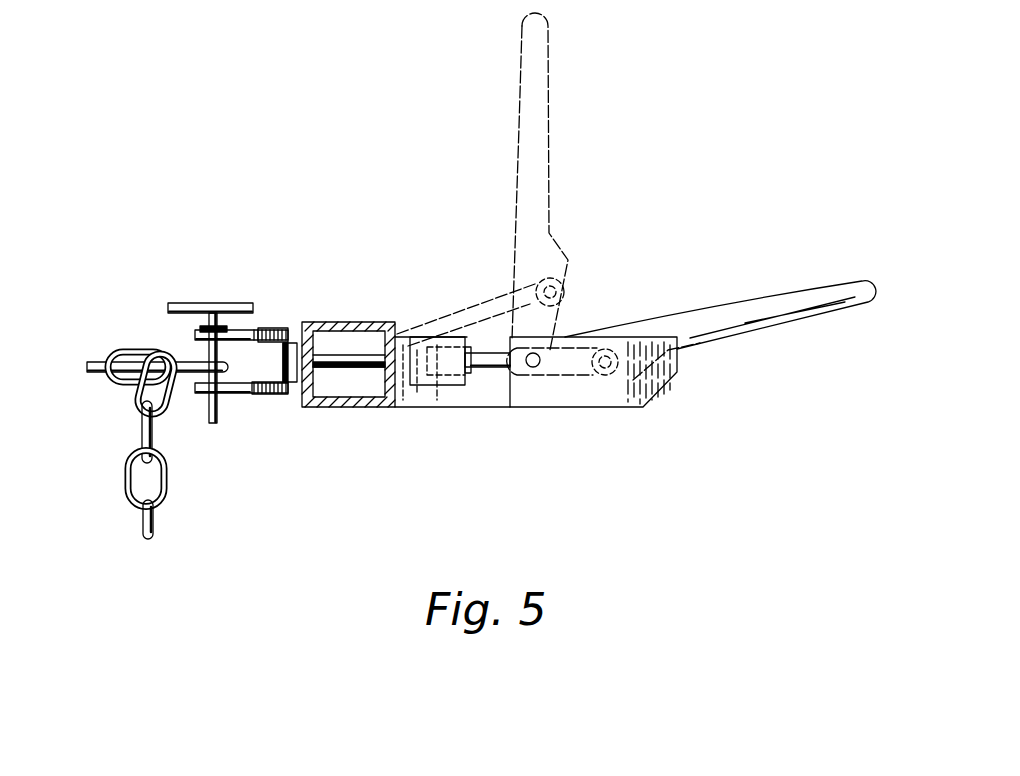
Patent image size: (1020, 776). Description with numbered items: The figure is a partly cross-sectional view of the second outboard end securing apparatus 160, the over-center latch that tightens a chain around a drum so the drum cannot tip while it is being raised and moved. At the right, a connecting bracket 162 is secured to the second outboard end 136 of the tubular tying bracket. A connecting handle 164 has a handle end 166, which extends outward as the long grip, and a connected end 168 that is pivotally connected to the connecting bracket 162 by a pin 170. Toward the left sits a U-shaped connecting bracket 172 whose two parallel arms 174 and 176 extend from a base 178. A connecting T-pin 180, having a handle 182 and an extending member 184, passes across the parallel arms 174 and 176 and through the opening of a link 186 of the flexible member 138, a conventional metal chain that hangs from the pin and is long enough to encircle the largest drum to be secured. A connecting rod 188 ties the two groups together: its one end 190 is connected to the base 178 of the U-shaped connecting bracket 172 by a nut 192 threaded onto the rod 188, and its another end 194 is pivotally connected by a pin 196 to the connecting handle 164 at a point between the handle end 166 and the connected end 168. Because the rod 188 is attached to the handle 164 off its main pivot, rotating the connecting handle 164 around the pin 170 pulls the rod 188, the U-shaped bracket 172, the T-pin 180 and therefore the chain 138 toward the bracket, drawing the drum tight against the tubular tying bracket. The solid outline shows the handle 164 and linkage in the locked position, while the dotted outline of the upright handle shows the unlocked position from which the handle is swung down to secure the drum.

The second outboard end 136 is at (396, 408).
The flexible member 138 is at (88, 361).
The second outboard end securing apparatus 160 is at (378, 242).
The connecting bracket 162 is at (635, 410).
The connecting handle 164 is at (838, 281).
The handle end 166 is at (820, 315).
The connected end 168 is at (518, 388).
The pin 170 is at (533, 368).
The U-shaped connecting bracket 172 is at (267, 326).
The parallel arm 174 is at (193, 333).
The parallel arm 176 is at (240, 395).
The base 178 is at (297, 397).
The connecting T-pin 180 is at (242, 290).
The handle 182 is at (216, 420).
The extending member 184 is at (180, 302).
The link 186 is at (249, 396).
The connecting rod 188 is at (345, 368).
The one end 190 is at (325, 332).
The nut 192 is at (296, 340).
The another end 194 is at (506, 298).
The pin 196 is at (562, 284).